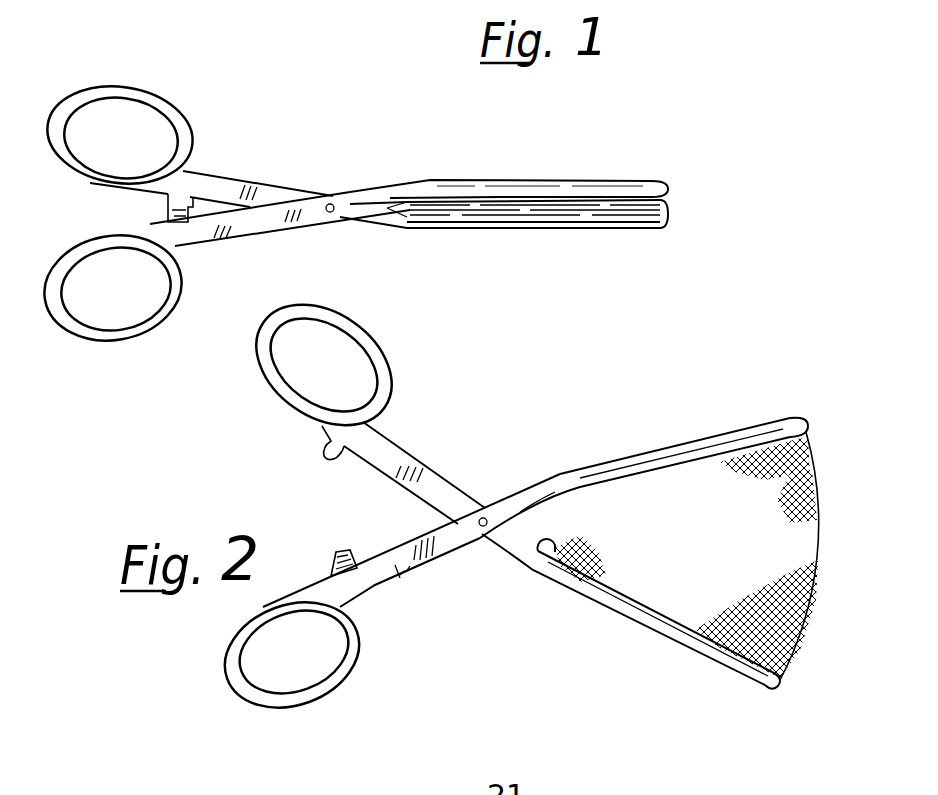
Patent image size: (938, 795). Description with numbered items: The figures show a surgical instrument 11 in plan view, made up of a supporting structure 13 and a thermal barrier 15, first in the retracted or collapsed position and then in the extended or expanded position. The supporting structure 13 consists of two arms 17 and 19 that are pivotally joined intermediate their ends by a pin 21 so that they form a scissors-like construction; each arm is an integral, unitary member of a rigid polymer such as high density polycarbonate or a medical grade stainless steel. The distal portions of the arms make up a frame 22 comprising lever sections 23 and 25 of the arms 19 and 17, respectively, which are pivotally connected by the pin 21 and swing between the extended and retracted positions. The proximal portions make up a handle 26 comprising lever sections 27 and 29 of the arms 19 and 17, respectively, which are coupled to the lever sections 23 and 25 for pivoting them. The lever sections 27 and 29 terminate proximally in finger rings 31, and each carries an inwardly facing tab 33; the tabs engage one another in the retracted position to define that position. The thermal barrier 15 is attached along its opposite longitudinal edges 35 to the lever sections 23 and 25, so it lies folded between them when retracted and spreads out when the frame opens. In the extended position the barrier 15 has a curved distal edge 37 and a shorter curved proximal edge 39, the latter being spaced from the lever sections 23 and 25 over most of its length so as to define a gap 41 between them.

In FIG. 1, the surgical instrument 11 is at (573, 155).
In FIG. 2, the surgical instrument 11 is at (725, 410).
In FIG. 1, the supporting structure 13 is at (560, 244).
In FIG. 2, the supporting structure 13 is at (628, 449).
In FIG. 1, the thermal barrier 15 is at (668, 208).
In FIG. 2, the thermal barrier 15 is at (780, 551).
In FIG. 1, the arm 17 is at (133, 84).
In FIG. 1, the arm 19 is at (128, 342).
In FIG. 1, the pin 21 is at (333, 196).
In FIG. 2, the pin 21 is at (487, 508).
In FIG. 1, the frame 22 is at (432, 176).
In FIG. 1, the lever section 23 is at (647, 183).
In FIG. 2, the lever section 23 is at (790, 417).
In FIG. 1, the lever section 25 is at (660, 233).
In FIG. 2, the lever section 25 is at (767, 693).
In FIG. 1, the handle 26 is at (262, 181).
In FIG. 1, the lever section 27 is at (274, 222).
In FIG. 2, the lever section 27 is at (397, 562).
In FIG. 1, the lever section 29 is at (200, 177).
In FIG. 2, the lever section 29 is at (400, 457).
In FIG. 1, the finger rings 31 is at (70, 100).
In FIG. 1, the tab 33 is at (167, 204).
In FIG. 2, the tab 33 is at (335, 460).
In FIG. 2, the longitudinal edges 35 is at (683, 456).
In FIG. 2, the distal edge 37 is at (820, 535).
In FIG. 2, the proximal edge 39 is at (528, 552).
In FIG. 2, the gap 41 is at (552, 512).